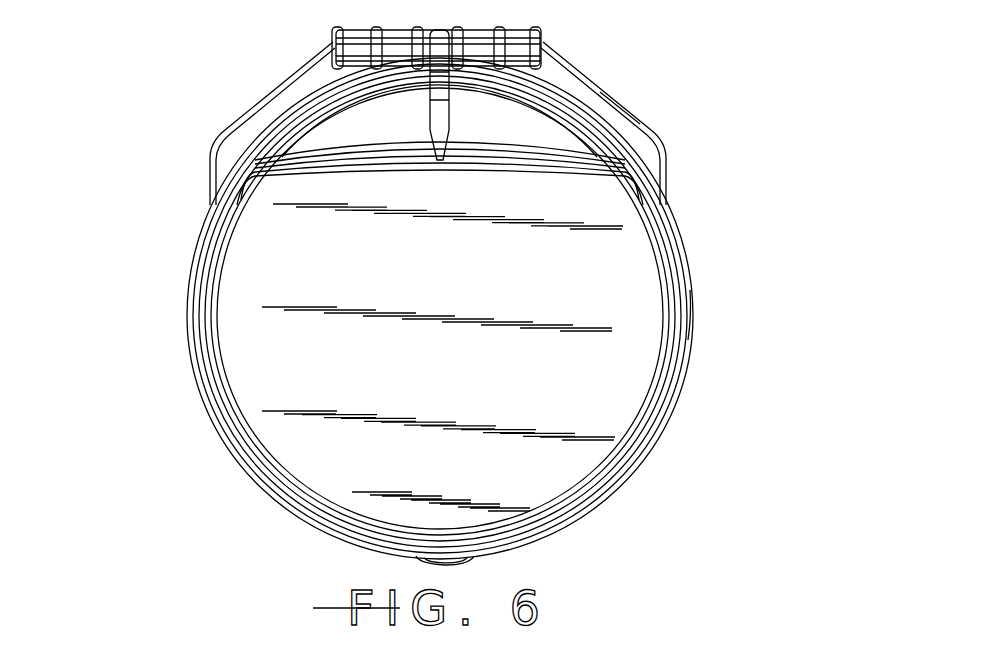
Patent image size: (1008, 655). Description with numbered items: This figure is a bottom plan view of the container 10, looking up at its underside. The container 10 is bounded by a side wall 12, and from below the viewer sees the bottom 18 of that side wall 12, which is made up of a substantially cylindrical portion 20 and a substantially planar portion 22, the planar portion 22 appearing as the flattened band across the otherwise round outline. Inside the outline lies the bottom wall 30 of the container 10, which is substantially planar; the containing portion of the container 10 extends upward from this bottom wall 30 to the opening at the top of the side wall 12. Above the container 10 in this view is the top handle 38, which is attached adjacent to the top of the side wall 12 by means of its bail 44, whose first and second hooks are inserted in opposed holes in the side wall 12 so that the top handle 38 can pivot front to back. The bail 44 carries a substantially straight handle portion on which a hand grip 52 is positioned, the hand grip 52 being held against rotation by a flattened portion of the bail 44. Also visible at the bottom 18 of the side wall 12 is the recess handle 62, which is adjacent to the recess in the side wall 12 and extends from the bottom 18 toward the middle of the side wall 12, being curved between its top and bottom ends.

The container 10 is at (234, 76).
The side wall 12 is at (687, 353).
The bottom 18 is at (693, 277).
The substantially cylindrical portion 20 is at (517, 548).
The substantially planar portion 22 is at (474, 160).
The bottom wall 30 is at (262, 388).
The top handle 38 is at (598, 82).
The bail 44 is at (620, 100).
The hand grip 52 is at (521, 30).
The recess handle 62 is at (430, 97).